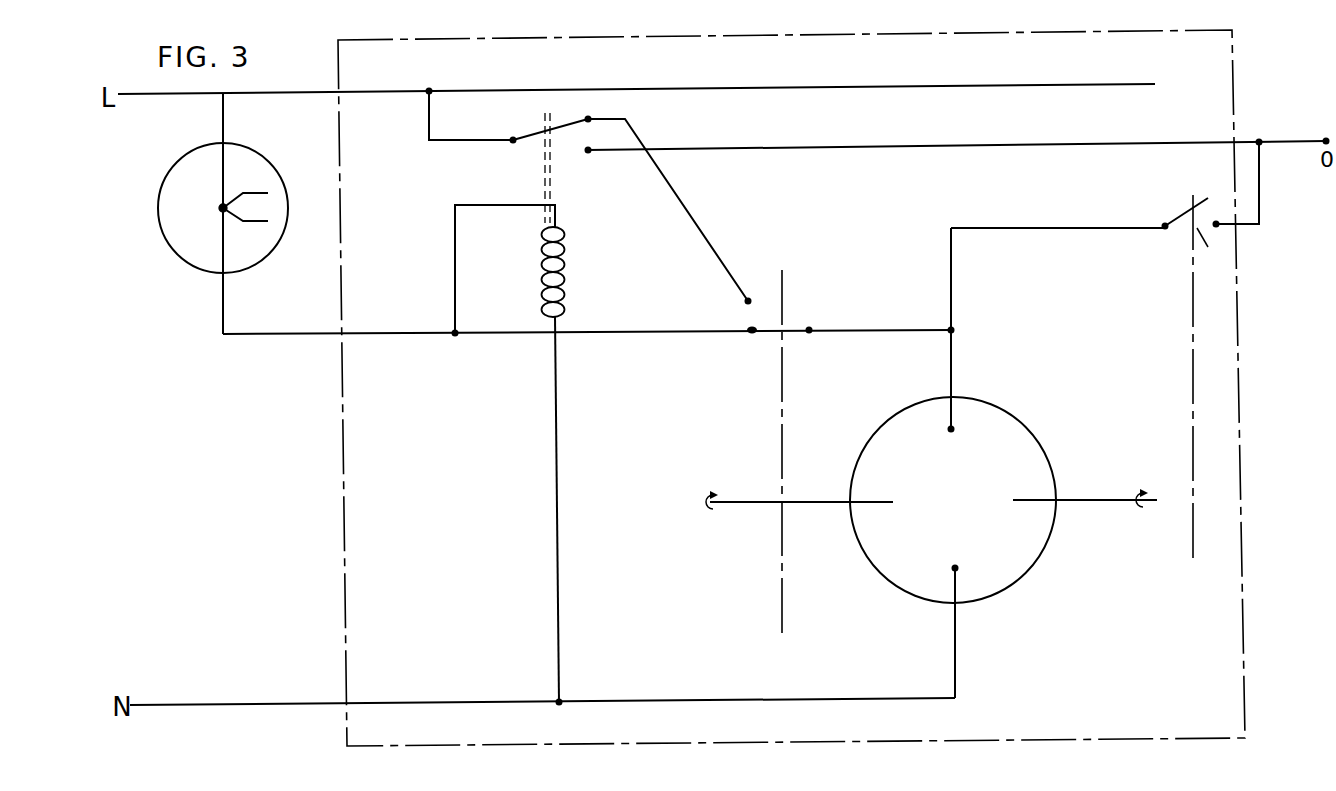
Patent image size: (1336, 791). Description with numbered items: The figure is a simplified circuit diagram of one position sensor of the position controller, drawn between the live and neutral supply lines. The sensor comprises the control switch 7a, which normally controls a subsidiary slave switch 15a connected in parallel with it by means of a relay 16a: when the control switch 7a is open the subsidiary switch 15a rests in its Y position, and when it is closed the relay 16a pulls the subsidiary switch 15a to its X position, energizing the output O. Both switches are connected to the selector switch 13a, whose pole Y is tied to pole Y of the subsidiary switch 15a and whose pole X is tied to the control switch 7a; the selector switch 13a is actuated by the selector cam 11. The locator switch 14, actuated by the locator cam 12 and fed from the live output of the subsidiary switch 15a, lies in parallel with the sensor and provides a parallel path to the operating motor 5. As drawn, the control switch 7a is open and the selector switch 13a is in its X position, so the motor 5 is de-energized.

The control switch 7a is at (202, 243).
The subsidiary switch 15a is at (555, 120).
The relay 16a is at (567, 278).
The selector switch 13a is at (787, 323).
The selector cam 11 is at (780, 395).
The operating motor 5 is at (980, 450).
The locator switch 14 is at (1195, 240).
The locator cam 12 is at (1192, 305).